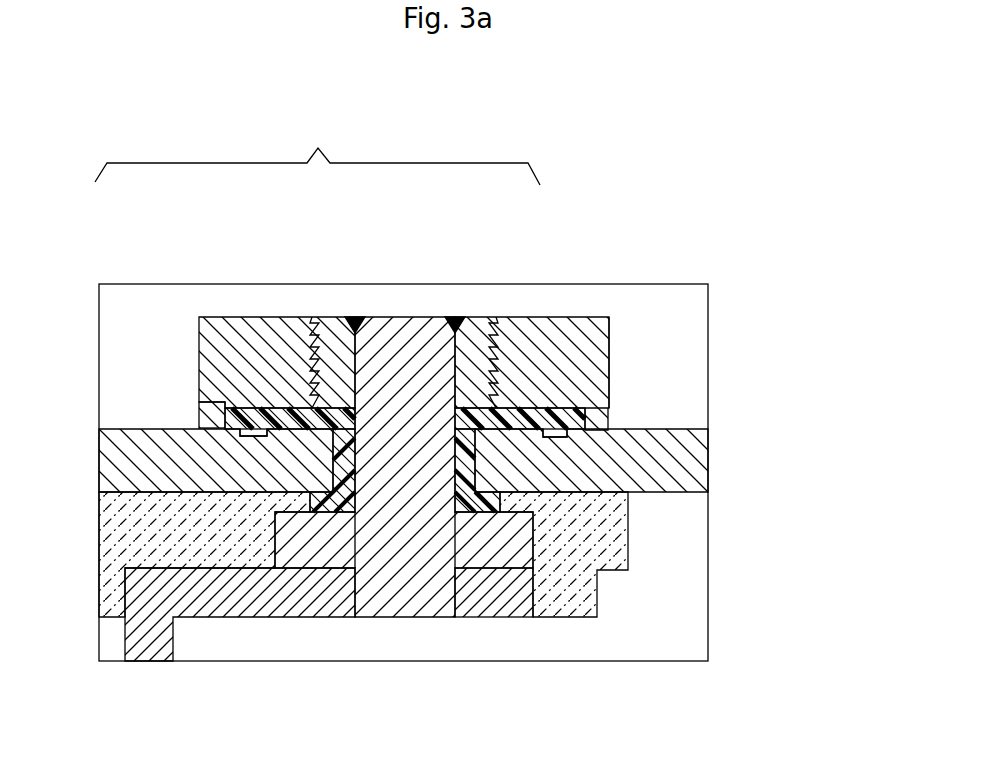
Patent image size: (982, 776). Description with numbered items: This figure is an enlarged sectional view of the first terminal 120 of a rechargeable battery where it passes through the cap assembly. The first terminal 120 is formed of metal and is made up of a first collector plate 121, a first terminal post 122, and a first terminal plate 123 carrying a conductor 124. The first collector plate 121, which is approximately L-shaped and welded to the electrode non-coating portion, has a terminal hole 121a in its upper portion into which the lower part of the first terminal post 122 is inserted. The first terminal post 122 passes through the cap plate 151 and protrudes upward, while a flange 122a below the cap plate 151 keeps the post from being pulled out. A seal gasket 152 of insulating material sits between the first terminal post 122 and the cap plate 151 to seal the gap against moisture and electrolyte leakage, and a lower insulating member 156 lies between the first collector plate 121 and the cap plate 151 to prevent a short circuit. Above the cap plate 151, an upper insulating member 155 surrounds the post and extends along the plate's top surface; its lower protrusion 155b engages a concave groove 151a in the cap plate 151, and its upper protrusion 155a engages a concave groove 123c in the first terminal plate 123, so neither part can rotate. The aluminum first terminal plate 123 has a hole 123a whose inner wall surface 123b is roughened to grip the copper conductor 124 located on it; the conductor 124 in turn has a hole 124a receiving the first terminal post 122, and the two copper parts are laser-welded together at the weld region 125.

The first terminal 120 is at (317, 146).
The first collector plate 121 is at (158, 587).
The terminal hole 121a is at (372, 592).
The first terminal post 122 is at (400, 333).
The flange 122a is at (490, 545).
The first terminal plate 123 is at (223, 330).
The hole 123a is at (478, 335).
The surface 123b is at (530, 225).
The concave groove 123c is at (610, 412).
The conductor 124 is at (335, 330).
The hole 124a is at (452, 360).
The weld region 125 is at (355, 318).
The cap plate 151 is at (657, 470).
The concave groove 151a is at (563, 435).
The seal gasket 152 is at (312, 500).
The upper insulating member 155 is at (220, 430).
The protrusion 155a is at (609, 422).
The protrusion 155b is at (247, 434).
The lower insulating member 156 is at (608, 513).